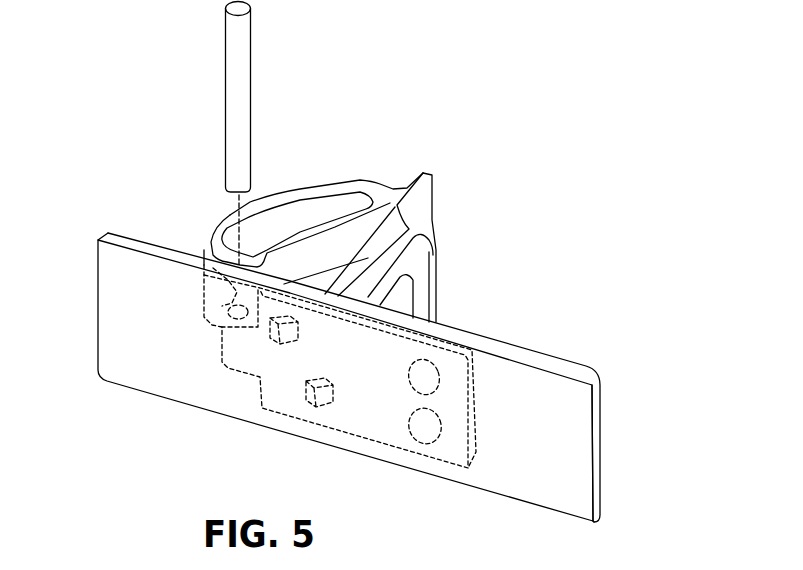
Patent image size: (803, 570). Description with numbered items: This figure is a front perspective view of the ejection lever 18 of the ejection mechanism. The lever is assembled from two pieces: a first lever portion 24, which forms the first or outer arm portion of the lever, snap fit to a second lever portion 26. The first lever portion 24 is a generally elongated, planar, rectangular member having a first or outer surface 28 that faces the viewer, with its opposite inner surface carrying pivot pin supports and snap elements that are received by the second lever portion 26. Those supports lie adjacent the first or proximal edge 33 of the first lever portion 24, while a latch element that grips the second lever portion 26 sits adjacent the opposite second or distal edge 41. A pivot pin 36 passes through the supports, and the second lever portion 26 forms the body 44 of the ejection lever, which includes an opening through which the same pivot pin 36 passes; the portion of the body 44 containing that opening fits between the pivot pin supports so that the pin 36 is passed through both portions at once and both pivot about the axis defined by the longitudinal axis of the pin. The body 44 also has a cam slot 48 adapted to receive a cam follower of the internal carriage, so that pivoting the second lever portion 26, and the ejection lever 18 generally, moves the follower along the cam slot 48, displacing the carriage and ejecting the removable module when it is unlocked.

The ejection lever 18 is at (513, 181).
The first lever portion 24 is at (625, 360).
The second lever portion 26 is at (456, 277).
The outer surface 28 is at (503, 468).
The proximal edge 33 is at (88, 295).
The pivot pin 36 is at (230, 104).
The distal edge 41 is at (615, 446).
The body 44 is at (340, 182).
The cam slot 48 is at (286, 222).